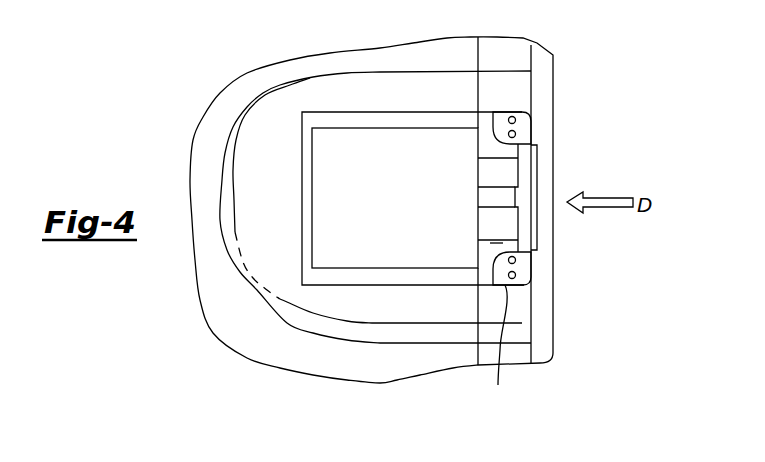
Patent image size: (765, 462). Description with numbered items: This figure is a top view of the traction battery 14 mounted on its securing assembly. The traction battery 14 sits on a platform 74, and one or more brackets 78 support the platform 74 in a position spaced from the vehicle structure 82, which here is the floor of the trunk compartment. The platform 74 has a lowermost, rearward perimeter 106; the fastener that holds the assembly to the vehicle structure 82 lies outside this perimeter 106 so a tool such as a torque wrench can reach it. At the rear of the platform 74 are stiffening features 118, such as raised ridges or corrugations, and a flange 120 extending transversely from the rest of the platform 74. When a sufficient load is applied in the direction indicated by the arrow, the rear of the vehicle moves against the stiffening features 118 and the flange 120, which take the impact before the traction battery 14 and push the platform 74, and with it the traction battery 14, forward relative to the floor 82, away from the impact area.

The traction battery 14 is at (390, 142).
The platform 74 is at (503, 243).
The brackets 78 is at (522, 127).
The vehicle structure 82 is at (358, 303).
The lowermost, rearward perimeter 106 is at (502, 345).
The stiffening features 118 is at (510, 178).
The flange 120 is at (538, 157).